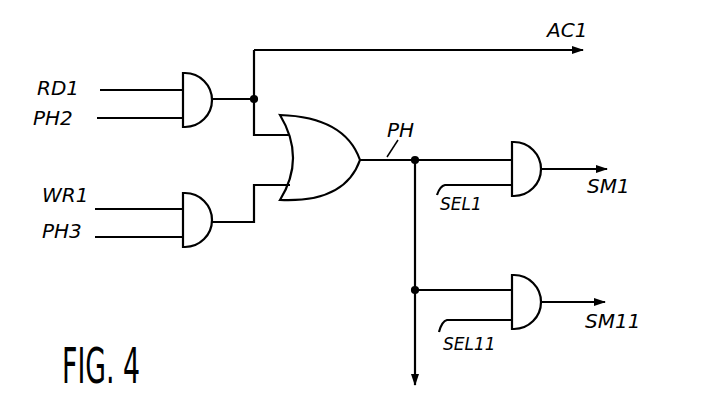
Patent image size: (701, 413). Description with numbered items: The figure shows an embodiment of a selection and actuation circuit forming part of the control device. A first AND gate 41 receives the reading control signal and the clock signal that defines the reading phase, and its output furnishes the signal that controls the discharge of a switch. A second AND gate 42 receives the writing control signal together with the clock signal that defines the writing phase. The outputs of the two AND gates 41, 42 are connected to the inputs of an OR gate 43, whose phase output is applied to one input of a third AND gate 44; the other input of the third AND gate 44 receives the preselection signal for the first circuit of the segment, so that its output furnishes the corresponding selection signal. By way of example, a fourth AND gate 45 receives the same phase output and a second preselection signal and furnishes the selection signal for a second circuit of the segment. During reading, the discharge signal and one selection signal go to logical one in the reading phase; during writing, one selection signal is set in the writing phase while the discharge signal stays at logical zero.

The first AND gate 41 is at (205, 62).
The second AND gate 42 is at (217, 185).
The OR gate 43 is at (343, 130).
The third AND gate 44 is at (537, 155).
The fourth AND gate 45 is at (538, 297).